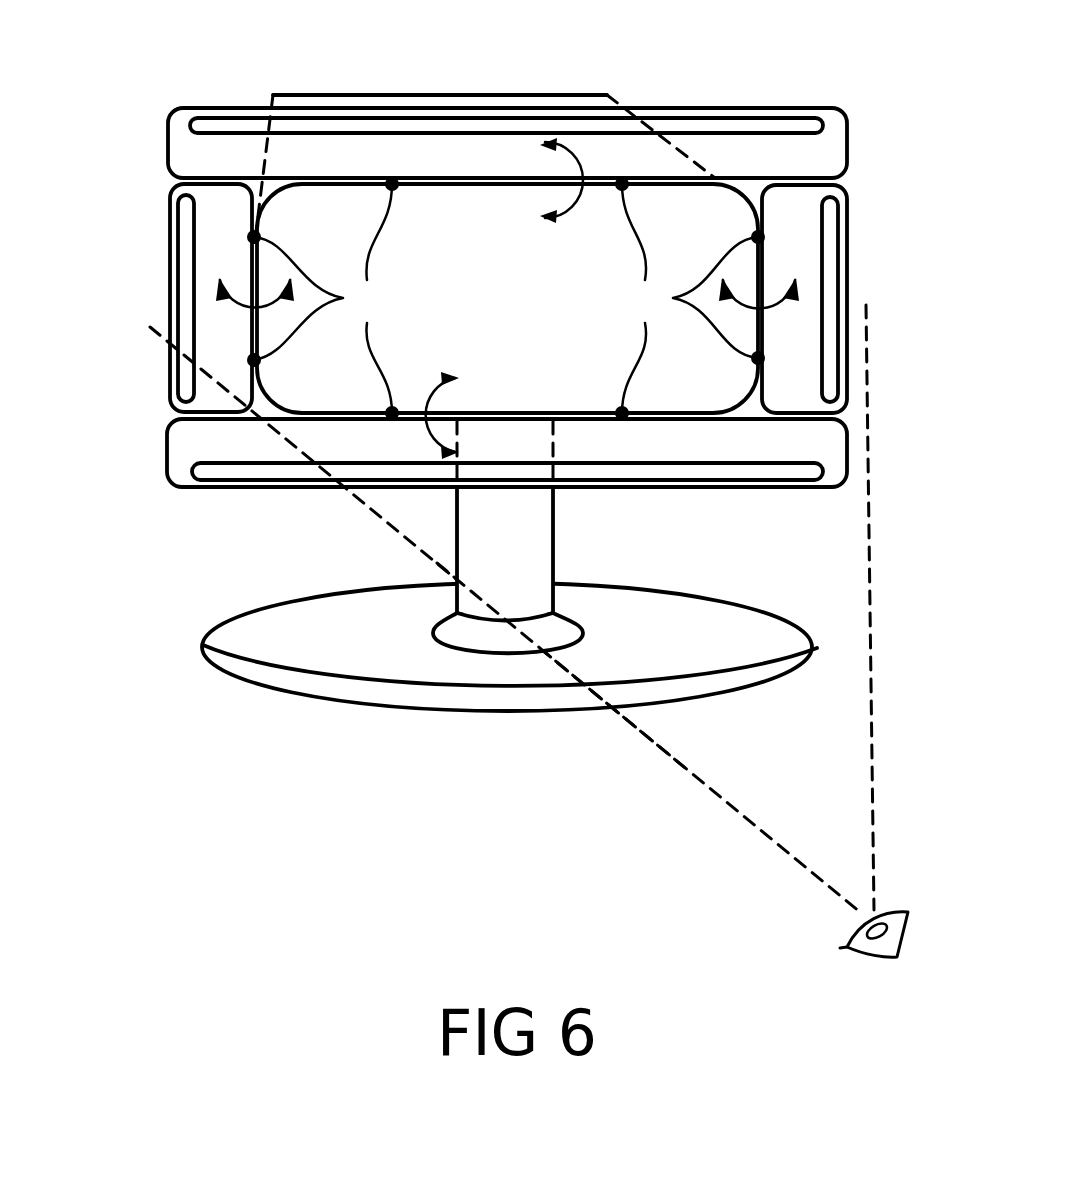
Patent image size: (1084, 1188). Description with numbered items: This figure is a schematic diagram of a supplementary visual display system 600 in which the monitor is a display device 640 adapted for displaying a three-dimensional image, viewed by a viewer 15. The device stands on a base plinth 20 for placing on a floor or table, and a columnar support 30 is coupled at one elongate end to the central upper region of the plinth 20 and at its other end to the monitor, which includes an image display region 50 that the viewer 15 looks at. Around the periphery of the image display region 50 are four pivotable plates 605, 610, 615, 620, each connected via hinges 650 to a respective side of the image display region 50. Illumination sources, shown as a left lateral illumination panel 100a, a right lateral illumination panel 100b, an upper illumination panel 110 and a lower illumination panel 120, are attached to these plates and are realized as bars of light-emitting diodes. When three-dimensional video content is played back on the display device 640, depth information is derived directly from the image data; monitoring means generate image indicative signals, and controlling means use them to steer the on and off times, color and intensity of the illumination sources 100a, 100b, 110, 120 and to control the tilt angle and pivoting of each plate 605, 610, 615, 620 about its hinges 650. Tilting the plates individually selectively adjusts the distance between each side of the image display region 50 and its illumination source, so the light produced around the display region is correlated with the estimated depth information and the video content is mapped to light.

The viewer 15 is at (826, 938).
The base plinth 20 is at (280, 620).
The columnar support 30 is at (533, 540).
The image display region 50 is at (527, 316).
The left lateral illumination panel 100a is at (183, 238).
The right lateral illumination panel 100b is at (830, 237).
The upper illumination panel 110 is at (731, 123).
The lower illumination panel 120 is at (675, 470).
The supplementary visual display system 600 is at (145, 735).
The pivotable plate 605 is at (208, 287).
The pivotable plate 610 is at (808, 287).
The pivotable plate 615 is at (183, 148).
The pivotable plate 620 is at (785, 445).
The display device 640 is at (482, 88).
The hinges 650 is at (506, 298).